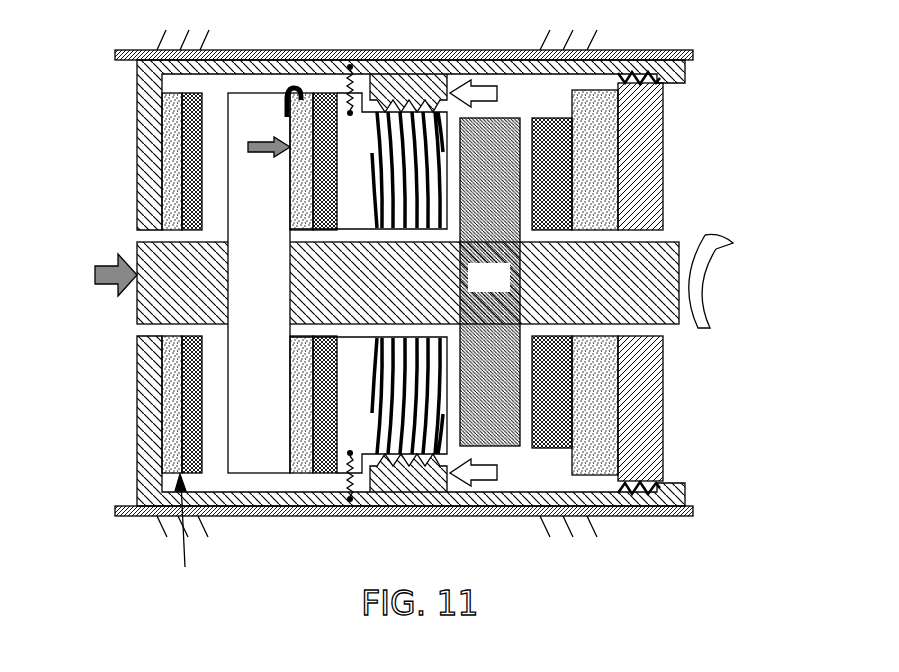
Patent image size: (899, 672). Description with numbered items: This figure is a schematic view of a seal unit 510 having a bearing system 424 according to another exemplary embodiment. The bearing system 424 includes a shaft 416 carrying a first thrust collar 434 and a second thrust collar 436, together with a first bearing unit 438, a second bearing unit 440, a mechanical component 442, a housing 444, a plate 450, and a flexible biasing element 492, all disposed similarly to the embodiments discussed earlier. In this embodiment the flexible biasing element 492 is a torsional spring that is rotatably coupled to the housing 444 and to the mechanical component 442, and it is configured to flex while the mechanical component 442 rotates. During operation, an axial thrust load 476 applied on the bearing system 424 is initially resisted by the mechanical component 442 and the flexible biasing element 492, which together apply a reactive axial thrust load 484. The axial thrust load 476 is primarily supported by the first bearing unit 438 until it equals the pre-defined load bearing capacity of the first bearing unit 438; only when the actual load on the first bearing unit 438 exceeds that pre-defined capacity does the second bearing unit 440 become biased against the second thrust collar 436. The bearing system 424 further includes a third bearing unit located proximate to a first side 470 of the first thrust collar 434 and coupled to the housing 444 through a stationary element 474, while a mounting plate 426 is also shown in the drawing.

The seal unit 510 is at (112, 55).
The mounting plate 426 is at (236, 50).
The housing 444 is at (405, 65).
The reactive axial thrust load 484 is at (478, 80).
The bearing system 424 is at (699, 93).
The plate 450 is at (657, 175).
The axial thrust load 476 is at (100, 258).
The first thrust collar 434 is at (281, 290).
The second thrust collar 436 is at (512, 290).
The shaft 416 is at (640, 296).
The mechanical component 442 is at (352, 343).
The first side 470 is at (228, 388).
The stationary element 474 is at (147, 432).
The second bearing unit 440 is at (590, 392).
The first bearing unit 438 is at (323, 475).
The flexible biasing element 492 is at (367, 491).